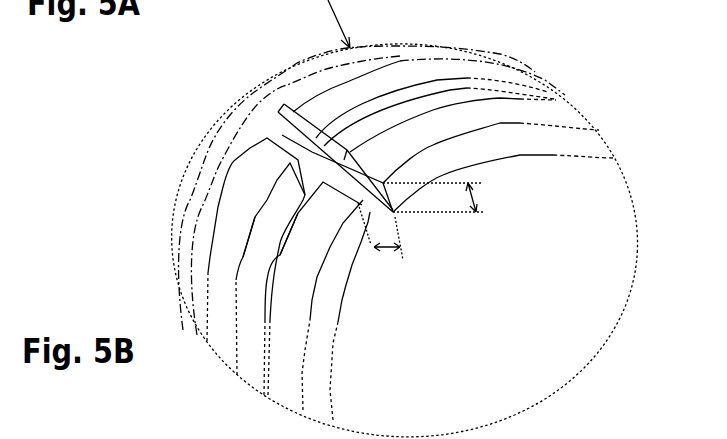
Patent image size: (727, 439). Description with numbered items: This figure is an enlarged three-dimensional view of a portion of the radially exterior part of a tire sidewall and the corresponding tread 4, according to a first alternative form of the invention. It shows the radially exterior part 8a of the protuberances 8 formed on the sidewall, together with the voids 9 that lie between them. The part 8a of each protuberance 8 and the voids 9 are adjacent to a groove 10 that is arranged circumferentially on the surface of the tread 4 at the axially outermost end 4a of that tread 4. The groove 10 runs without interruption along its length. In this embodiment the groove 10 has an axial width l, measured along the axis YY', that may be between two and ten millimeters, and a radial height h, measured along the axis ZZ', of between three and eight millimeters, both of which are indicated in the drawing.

The tread 4 is at (447, 132).
The axially outermost end of the tread 4a is at (375, 120).
The protuberance 8 is at (243, 162).
The radially exterior part of the protuberance 8a is at (238, 215).
The void 9 is at (282, 238).
The groove 10 is at (313, 167).
The radial height of the groove h is at (438, 197).
The axial width of the groove l is at (380, 240).